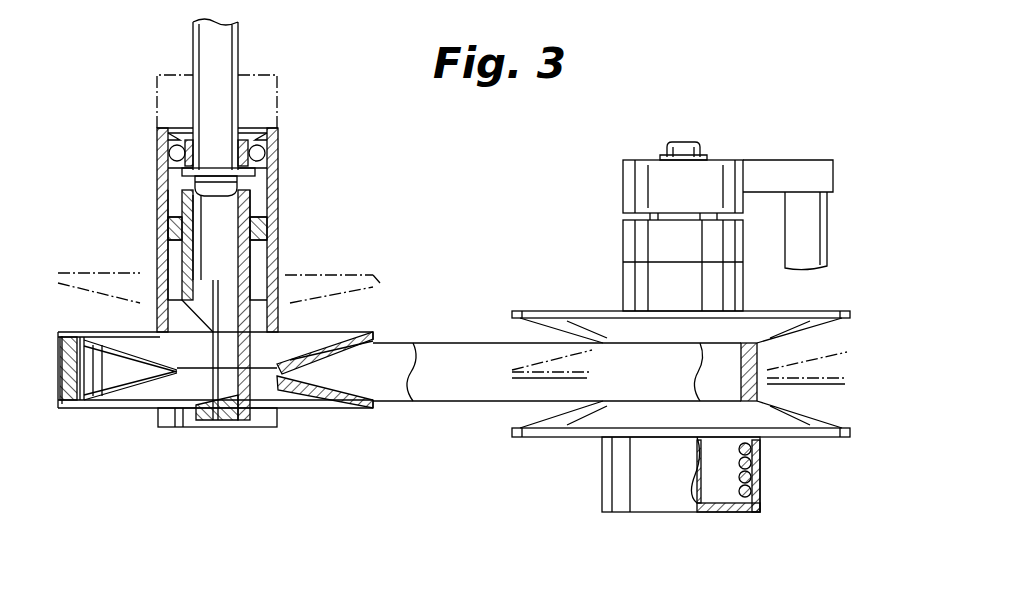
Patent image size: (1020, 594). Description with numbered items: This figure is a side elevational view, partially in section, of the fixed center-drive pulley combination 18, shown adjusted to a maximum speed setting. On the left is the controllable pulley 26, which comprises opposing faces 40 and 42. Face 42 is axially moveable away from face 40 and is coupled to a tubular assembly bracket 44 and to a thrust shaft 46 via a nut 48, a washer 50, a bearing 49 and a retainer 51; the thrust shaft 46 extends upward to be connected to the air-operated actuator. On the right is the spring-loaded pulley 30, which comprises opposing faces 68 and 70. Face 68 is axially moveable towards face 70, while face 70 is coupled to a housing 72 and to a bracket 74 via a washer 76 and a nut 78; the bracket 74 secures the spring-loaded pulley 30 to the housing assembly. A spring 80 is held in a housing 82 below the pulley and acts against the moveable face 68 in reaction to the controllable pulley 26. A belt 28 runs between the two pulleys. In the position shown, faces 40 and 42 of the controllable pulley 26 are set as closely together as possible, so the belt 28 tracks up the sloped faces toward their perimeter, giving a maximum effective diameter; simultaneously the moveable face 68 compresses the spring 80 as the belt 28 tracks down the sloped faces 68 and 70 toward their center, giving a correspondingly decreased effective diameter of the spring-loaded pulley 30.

The pulley combination 18 is at (352, 448).
The controllable pulley 26 is at (145, 416).
The belt 28 is at (68, 393).
The spring-loaded pulley 30 is at (580, 290).
The face 40 is at (380, 402).
The face 42 is at (97, 340).
The tubular assembly bracket 44 is at (157, 222).
The thrust shaft 46 is at (227, 53).
The nut 48 is at (237, 187).
The bearing 49 is at (170, 157).
The washer 50 is at (255, 180).
The retainer 51 is at (177, 128).
The face 68 is at (845, 375).
The face 70 is at (848, 328).
The housing 72 is at (633, 238).
The bracket 74 is at (802, 168).
The washer 76 is at (663, 157).
The nut 78 is at (692, 143).
The spring 80 is at (760, 468).
The housing 82 is at (733, 512).